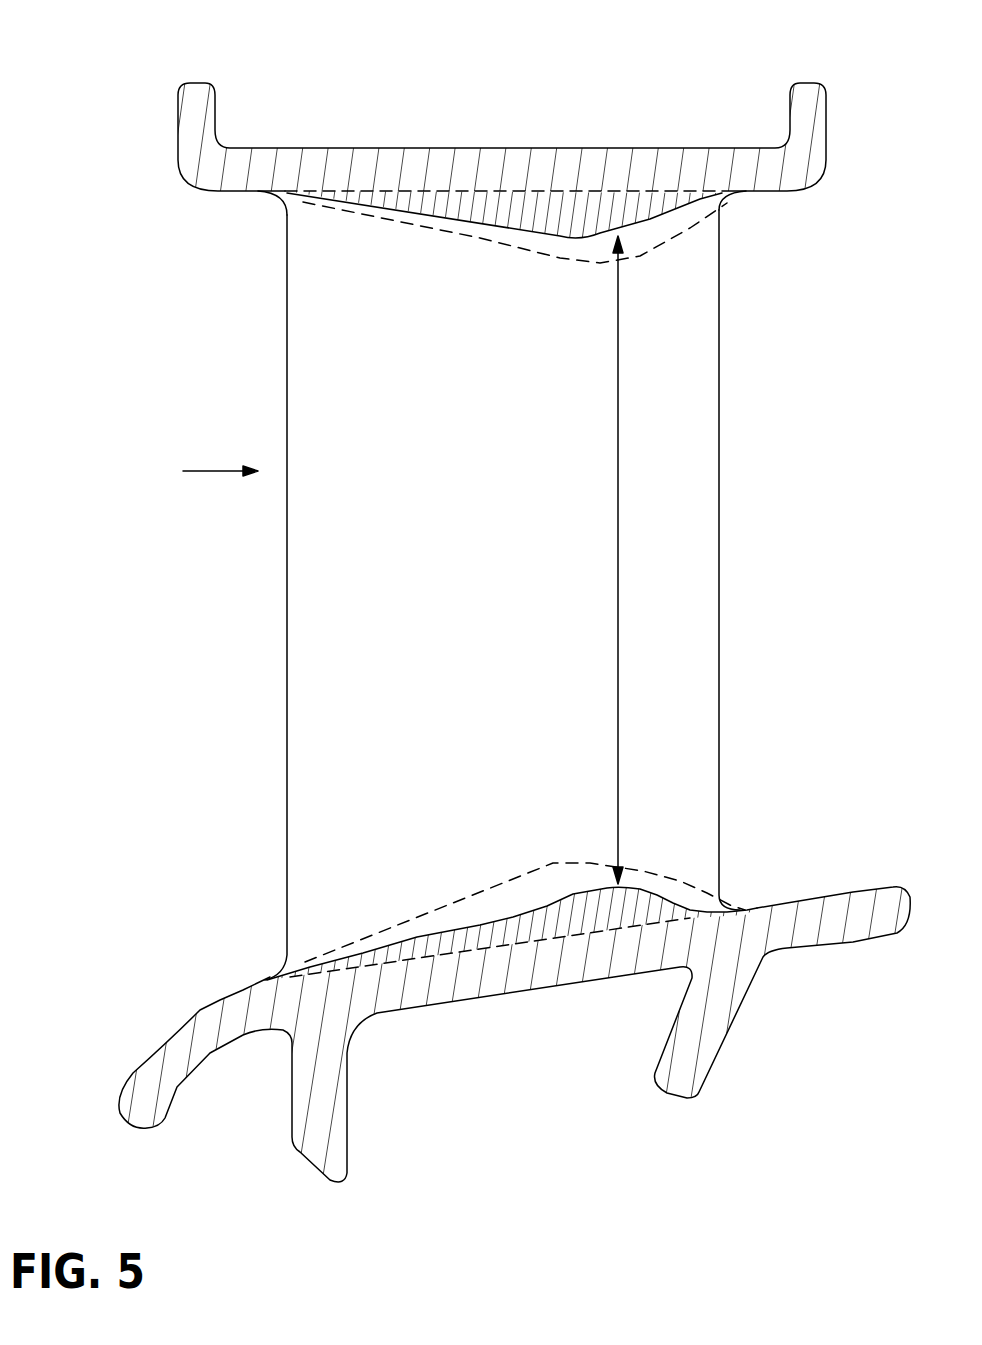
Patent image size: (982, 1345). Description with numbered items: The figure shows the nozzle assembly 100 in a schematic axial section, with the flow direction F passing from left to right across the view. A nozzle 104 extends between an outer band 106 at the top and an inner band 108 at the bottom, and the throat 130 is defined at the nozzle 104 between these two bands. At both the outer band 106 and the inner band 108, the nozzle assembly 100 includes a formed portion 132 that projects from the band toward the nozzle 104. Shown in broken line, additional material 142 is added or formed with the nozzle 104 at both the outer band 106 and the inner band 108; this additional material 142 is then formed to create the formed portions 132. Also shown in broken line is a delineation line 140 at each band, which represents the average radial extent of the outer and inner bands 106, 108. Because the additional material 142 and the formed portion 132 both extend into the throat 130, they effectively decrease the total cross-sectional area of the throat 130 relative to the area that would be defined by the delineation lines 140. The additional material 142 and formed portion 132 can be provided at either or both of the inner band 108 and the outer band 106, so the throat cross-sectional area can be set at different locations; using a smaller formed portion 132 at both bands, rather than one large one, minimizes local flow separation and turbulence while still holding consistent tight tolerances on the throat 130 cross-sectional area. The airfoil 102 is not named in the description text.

The nozzle assembly 100 is at (177, 30).
The airfoil 102 is at (459, 444).
The nozzle 104 is at (284, 399).
The outer band 106 is at (345, 160).
The inner band 108 is at (415, 1010).
The throat 130 is at (606, 388).
The formed portion 132 is at (573, 236).
The delineation line 140 is at (580, 188).
The additional material 142 is at (470, 240).